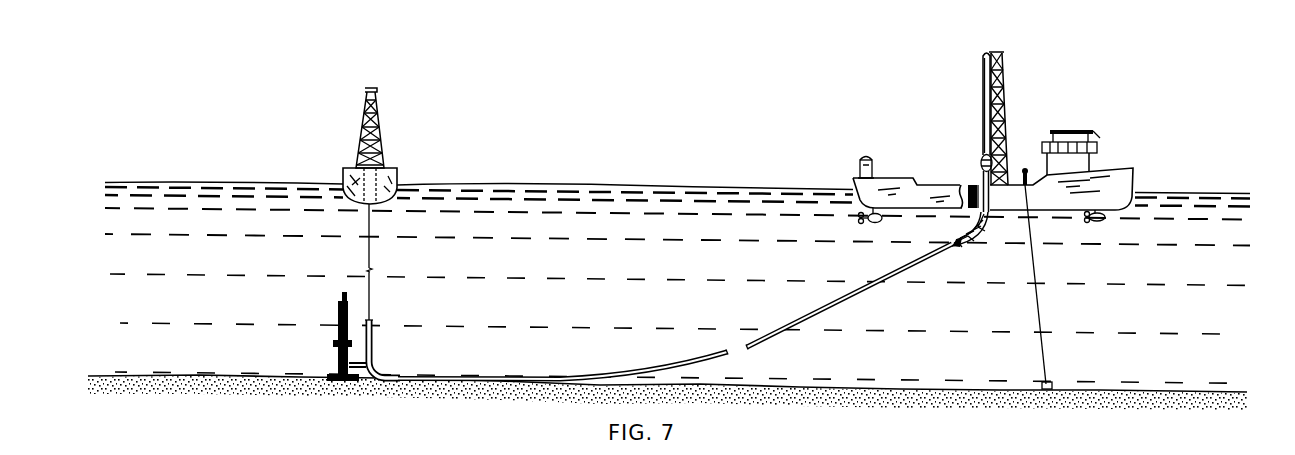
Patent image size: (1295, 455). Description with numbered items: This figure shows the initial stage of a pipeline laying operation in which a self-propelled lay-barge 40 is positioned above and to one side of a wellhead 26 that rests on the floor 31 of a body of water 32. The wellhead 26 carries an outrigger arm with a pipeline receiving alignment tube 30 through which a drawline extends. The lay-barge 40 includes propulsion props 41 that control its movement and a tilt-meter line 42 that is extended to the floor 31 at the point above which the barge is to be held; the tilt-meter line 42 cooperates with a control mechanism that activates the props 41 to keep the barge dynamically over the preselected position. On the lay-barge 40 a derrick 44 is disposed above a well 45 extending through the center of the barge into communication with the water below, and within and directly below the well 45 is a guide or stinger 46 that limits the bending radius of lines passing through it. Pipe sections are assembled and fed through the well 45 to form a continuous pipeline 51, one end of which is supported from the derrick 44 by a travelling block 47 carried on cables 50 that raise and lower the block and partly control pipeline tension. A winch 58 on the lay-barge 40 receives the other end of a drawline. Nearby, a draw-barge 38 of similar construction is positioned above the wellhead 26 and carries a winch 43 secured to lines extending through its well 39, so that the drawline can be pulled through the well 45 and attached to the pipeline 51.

The wellhead 26 is at (338, 330).
The alignment tube 30 is at (381, 371).
The floor 31 is at (945, 391).
The body of water 32 is at (536, 183).
The draw-barge 38 is at (394, 122).
The well 39 is at (340, 171).
The lay-barge 40 is at (1017, 133).
The propulsion props 41 is at (874, 224).
The tilt-meter line 42 is at (1043, 351).
The winch 43 is at (398, 168).
The derrick 44 is at (1004, 84).
The well 45 is at (979, 186).
The stinger 46 is at (969, 237).
The travelling block 47 is at (982, 158).
The cables 50 is at (983, 98).
The pipeline 51 is at (827, 314).
The winch 58 is at (868, 158).